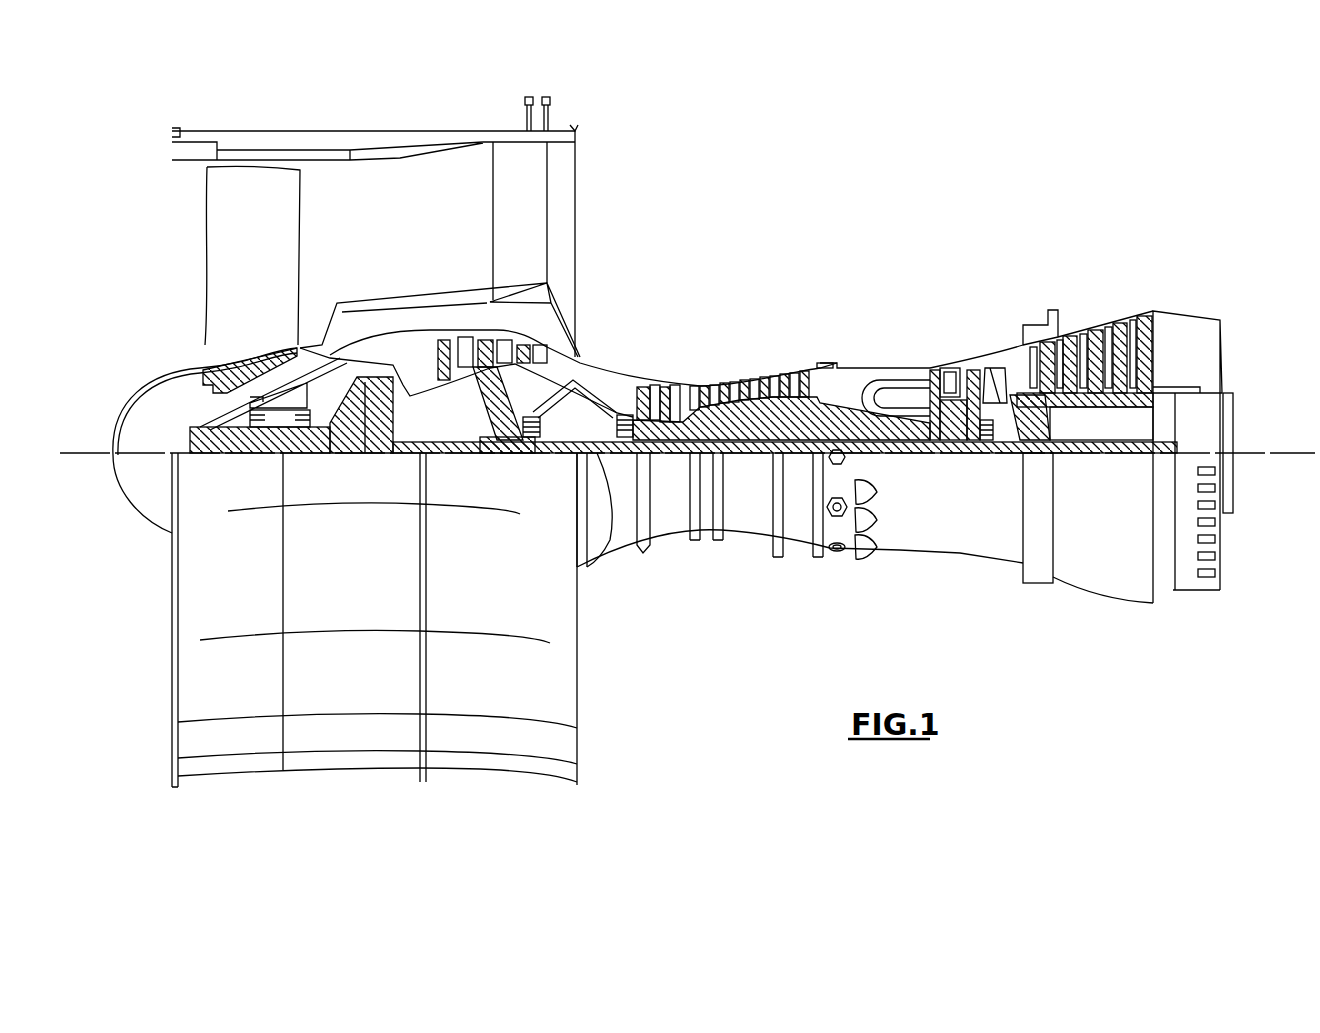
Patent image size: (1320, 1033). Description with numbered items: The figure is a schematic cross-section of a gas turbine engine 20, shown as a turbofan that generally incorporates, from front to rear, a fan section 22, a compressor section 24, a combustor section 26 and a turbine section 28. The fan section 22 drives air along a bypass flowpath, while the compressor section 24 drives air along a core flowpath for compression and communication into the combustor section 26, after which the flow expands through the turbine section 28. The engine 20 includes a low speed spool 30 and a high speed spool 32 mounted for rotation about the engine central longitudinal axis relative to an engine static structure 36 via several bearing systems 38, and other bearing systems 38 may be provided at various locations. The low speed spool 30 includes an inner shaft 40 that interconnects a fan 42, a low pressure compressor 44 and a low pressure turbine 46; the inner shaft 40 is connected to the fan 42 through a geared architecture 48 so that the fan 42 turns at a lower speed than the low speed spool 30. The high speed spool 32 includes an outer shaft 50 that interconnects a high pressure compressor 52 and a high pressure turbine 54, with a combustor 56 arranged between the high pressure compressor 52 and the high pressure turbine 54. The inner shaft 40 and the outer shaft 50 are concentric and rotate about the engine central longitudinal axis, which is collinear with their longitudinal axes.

The gas turbine engine 20 is at (905, 185).
The fan section 22 is at (345, 424).
The compressor section 24 is at (568, 368).
The combustor section 26 is at (877, 347).
The turbine section 28 is at (1081, 417).
The low speed spool 30 is at (666, 523).
The high speed spool 32 is at (785, 412).
The engine static structure 36 is at (798, 560).
The bearing systems 38 is at (533, 455).
The inner shaft 40 is at (603, 548).
The fan 42 is at (262, 281).
The low pressure compressor 44 is at (505, 345).
The low pressure turbine 46 is at (1093, 333).
The geared architecture 48 is at (383, 433).
The outer shaft 50 is at (886, 440).
The high pressure compressor 52 is at (725, 420).
The high pressure turbine 54 is at (955, 370).
The combustor 56 is at (887, 388).